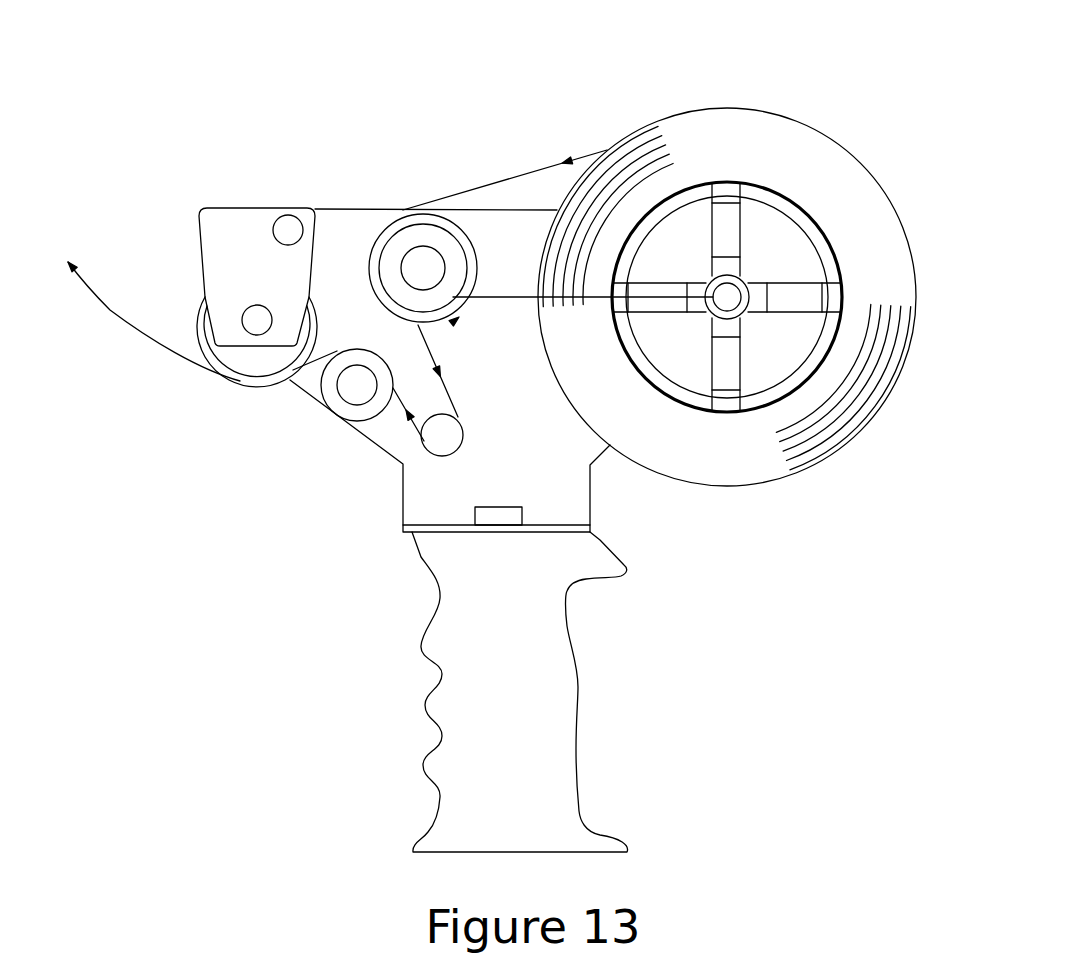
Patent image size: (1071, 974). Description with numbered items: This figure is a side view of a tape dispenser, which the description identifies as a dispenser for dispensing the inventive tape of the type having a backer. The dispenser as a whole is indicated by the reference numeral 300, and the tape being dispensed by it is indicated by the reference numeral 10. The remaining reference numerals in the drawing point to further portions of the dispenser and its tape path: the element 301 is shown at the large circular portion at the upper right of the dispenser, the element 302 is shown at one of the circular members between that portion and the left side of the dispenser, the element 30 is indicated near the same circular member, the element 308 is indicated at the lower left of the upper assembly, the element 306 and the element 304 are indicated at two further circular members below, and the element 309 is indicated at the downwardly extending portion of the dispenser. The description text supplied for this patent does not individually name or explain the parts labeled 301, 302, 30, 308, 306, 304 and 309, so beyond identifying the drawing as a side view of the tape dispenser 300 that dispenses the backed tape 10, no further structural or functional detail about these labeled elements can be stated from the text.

The tape dispenser 300 is at (470, 147).
The tape 10 is at (537, 163).
The tape reel 301 is at (773, 203).
The roller E 302 is at (412, 242).
The rotation direction arrow 30 is at (448, 326).
The guide roller with bracket 308 is at (247, 363).
The roller C 306 is at (352, 399).
The roller B 304 is at (443, 452).
The handle 309 is at (529, 631).